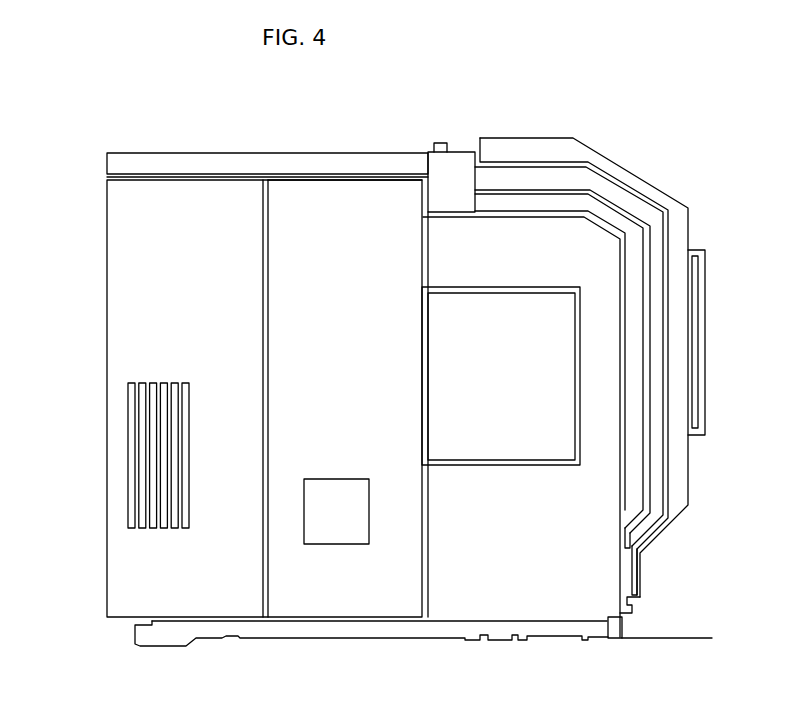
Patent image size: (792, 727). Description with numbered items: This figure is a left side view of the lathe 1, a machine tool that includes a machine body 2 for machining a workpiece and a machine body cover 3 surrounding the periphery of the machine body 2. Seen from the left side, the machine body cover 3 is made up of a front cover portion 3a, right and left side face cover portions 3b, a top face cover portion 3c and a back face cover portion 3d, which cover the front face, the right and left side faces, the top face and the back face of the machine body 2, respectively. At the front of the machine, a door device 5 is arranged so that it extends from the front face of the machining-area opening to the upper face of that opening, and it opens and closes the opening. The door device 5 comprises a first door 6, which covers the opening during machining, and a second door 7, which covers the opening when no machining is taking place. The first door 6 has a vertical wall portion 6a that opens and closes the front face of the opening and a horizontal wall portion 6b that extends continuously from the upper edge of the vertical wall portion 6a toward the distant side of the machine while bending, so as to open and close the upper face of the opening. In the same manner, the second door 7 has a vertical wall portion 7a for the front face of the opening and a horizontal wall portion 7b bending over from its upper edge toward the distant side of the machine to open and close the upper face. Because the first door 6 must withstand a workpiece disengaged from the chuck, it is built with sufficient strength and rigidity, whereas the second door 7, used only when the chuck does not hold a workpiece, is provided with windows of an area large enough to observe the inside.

The lathe 1 is at (315, 136).
The machine body 2 is at (371, 207).
The machine body cover 3 is at (105, 221).
The front cover portion 3a is at (625, 453).
The side face cover portion 3b is at (560, 555).
The top face cover portion 3c is at (410, 152).
The back face cover portion 3d is at (107, 387).
The door device 5 is at (732, 195).
The first door 6 is at (670, 219).
The vertical wall portion 6a is at (670, 330).
The horizontal wall portion 6b is at (543, 167).
The second door 7 is at (691, 234).
The vertical wall portion 7a is at (692, 300).
The horizontal wall portion 7b is at (525, 138).